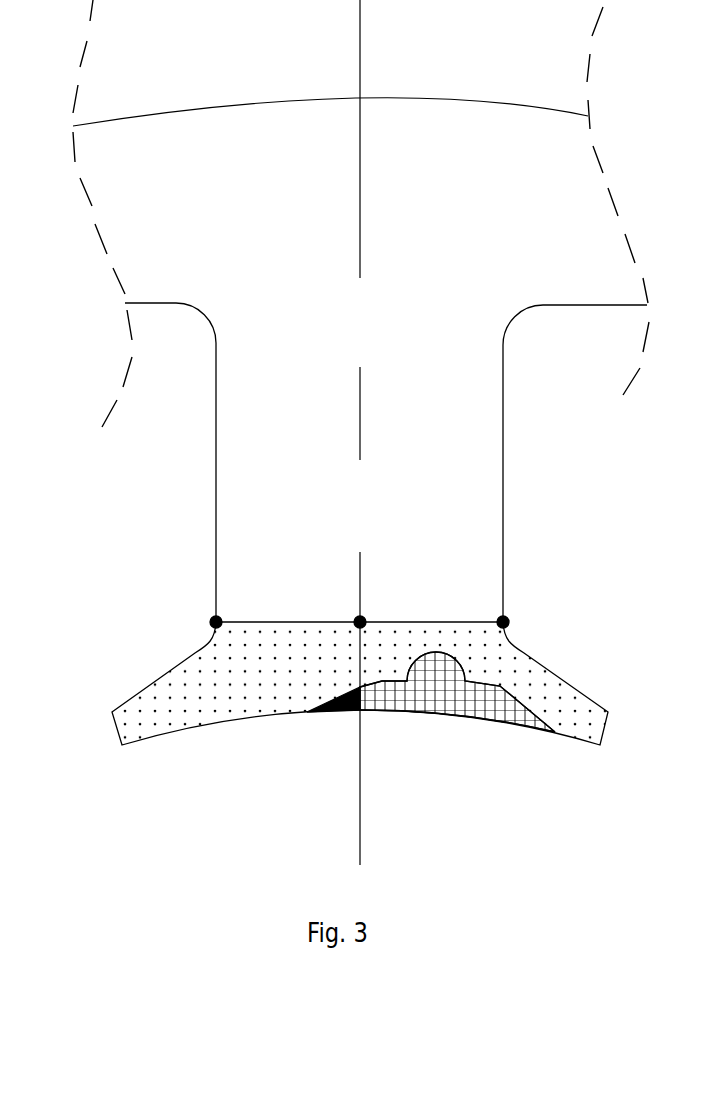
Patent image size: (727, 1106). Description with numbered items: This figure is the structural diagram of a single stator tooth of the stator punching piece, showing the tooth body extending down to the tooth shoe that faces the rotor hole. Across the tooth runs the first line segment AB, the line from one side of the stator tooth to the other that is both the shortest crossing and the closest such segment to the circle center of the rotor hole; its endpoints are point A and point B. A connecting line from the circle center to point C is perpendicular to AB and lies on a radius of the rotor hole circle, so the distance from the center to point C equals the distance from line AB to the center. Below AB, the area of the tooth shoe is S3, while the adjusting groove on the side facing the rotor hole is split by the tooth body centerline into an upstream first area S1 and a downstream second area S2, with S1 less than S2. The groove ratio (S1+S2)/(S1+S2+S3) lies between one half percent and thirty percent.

The area of the adjusting groove in the first area S1 is at (340, 711).
The area of the adjusting groove in the second area S2 is at (445, 705).
The area of the tooth shoe S3 is at (247, 666).
The point A is at (200, 622).
The point B is at (519, 623).
The point C is at (345, 603).